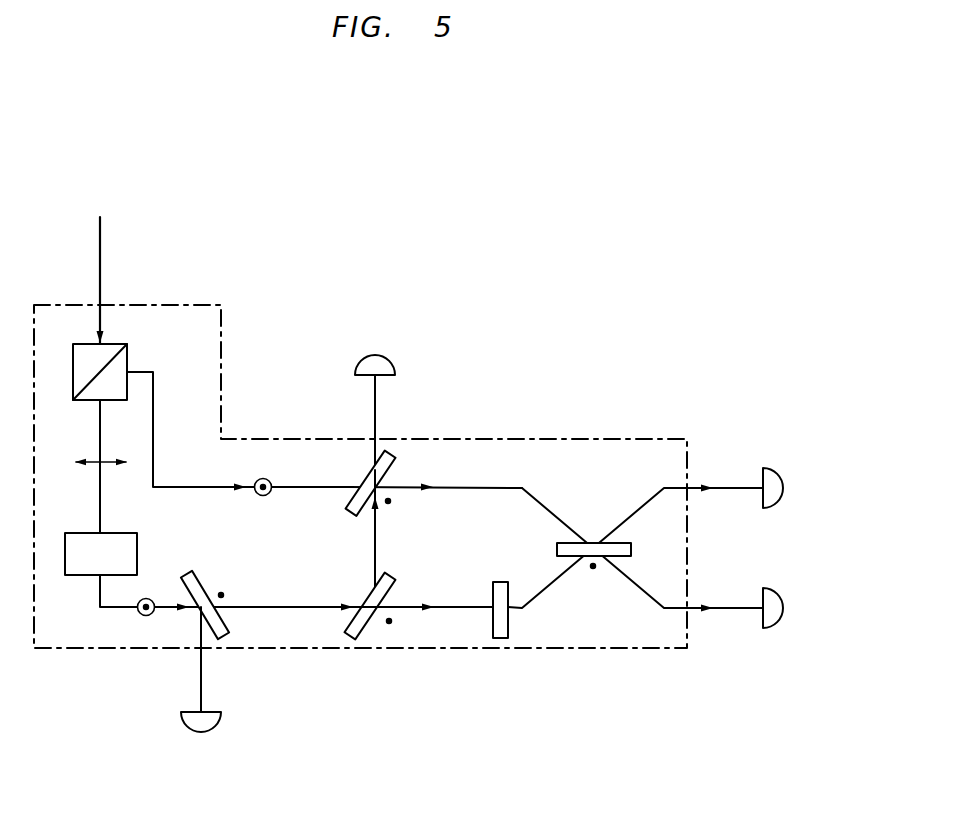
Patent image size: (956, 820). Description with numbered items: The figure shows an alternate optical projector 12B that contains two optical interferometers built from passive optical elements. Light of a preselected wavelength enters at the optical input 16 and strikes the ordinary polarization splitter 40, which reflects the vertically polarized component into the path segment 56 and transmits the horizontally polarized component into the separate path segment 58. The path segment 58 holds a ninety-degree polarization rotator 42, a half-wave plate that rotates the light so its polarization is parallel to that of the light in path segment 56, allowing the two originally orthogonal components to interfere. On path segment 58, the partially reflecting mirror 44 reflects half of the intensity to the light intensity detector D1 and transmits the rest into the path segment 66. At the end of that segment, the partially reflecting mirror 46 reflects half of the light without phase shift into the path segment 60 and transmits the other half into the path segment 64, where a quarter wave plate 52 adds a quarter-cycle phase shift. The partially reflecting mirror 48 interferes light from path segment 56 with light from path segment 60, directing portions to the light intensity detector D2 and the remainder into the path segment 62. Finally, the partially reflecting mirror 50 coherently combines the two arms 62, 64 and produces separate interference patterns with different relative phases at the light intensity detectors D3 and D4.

The alternate optical projector 12B is at (553, 440).
The optical input 16 is at (101, 278).
The ordinary polarization splitter 40 is at (128, 352).
The 90° polarization rotator 42 is at (101, 554).
The partially reflecting mirror 44 is at (197, 576).
The partially reflecting mirror 46 is at (350, 640).
The partially reflecting mirror 48 is at (392, 451).
The partially reflecting mirror 50 is at (633, 548).
The quarter wave plate 52 is at (498, 640).
The path segment 56 is at (200, 489).
The path segment 58 is at (99, 480).
The path segment 60 is at (376, 553).
The path segment 62 is at (540, 502).
The path segment 64 is at (430, 607).
The path segment 66 is at (268, 607).
The light intensity detector D1 is at (185, 722).
The light intensity detector D2 is at (391, 360).
The light intensity detector D3 is at (776, 470).
The light intensity detector D4 is at (776, 590).